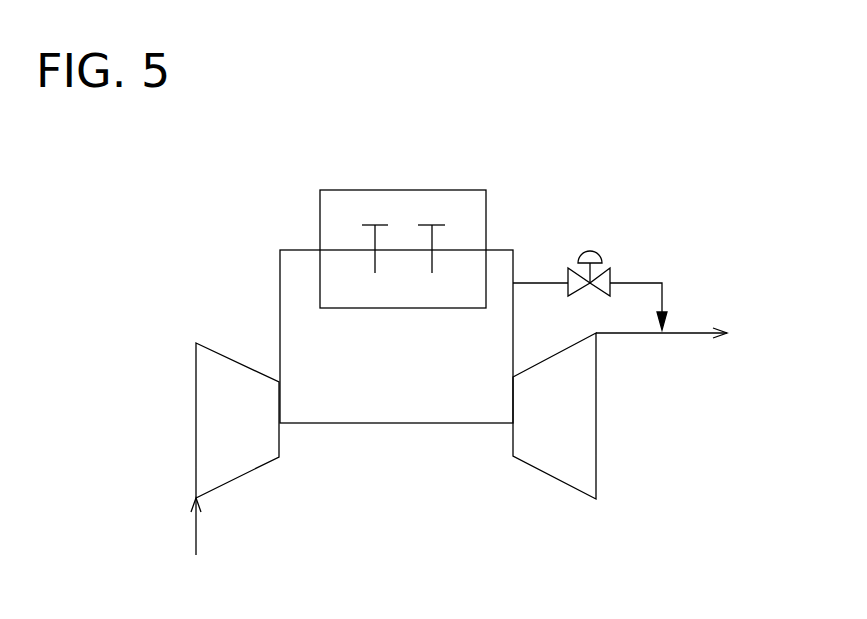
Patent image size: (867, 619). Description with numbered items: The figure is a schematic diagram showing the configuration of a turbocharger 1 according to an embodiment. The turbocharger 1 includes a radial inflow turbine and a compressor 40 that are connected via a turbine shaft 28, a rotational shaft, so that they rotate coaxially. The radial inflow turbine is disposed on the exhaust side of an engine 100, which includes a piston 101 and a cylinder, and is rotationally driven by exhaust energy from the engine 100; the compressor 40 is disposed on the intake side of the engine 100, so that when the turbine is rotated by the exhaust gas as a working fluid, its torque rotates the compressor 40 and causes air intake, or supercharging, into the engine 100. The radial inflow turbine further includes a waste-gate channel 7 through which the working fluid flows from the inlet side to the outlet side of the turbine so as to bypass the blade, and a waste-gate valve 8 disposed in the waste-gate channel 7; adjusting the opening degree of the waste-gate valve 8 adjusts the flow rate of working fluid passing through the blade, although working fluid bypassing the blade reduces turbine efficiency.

The turbocharger 1 is at (568, 483).
The waste-gate channel 7 is at (662, 292).
The waste-gate valve 8 is at (605, 275).
The turbine shaft 28 is at (390, 425).
The compressor 40 is at (213, 490).
The engine 100 is at (472, 200).
The piston 101 is at (375, 224).